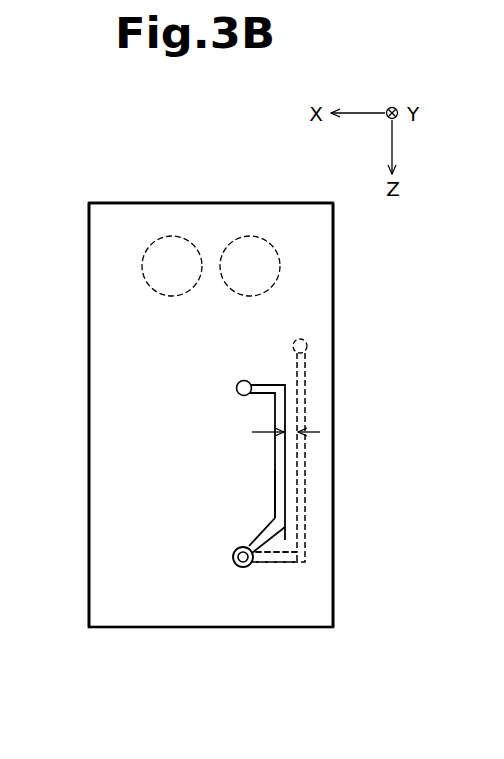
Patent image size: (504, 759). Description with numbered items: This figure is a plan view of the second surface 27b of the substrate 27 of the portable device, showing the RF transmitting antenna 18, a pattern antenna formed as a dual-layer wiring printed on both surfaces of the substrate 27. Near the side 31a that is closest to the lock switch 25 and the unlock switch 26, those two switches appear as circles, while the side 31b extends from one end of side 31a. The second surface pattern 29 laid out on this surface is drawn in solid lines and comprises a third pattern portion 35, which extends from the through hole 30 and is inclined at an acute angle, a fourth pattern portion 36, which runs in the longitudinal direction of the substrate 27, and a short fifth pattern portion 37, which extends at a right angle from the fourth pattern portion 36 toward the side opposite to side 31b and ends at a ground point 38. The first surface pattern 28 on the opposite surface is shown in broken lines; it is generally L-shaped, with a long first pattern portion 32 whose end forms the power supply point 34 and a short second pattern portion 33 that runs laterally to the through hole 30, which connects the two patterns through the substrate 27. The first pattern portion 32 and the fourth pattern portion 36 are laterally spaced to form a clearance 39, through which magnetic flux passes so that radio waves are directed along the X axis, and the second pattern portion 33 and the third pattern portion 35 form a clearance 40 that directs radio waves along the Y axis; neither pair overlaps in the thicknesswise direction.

The RF transmitting antenna 18 is at (231, 436).
The lock switch 25 is at (250, 236).
The unlock switch 26 is at (172, 236).
The substrate 27 is at (89, 508).
The second surface 27b is at (87, 333).
The first surface pattern 28 is at (318, 449).
The second surface pattern 29 is at (242, 445).
The through hole 30 is at (232, 557).
The side 31a is at (112, 202).
The side 31b is at (336, 262).
The first pattern portion 32 is at (306, 483).
The second pattern portion 33 is at (278, 565).
The power supply point 34 is at (300, 339).
The third pattern portion 35 is at (262, 538).
The fourth pattern portion 36 is at (275, 490).
The fifth pattern portion 37 is at (282, 384).
The ground point 38 is at (236, 389).
The clearance 39 is at (280, 430).
The clearance 40 is at (288, 540).